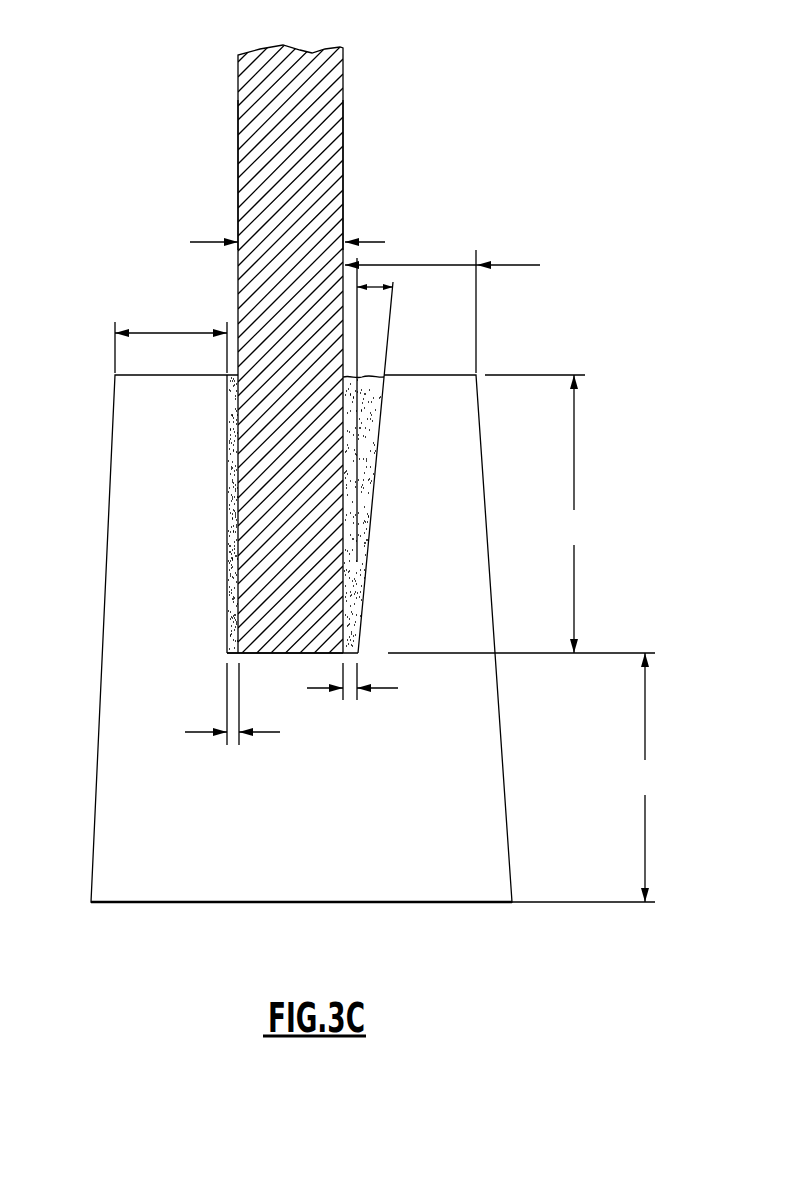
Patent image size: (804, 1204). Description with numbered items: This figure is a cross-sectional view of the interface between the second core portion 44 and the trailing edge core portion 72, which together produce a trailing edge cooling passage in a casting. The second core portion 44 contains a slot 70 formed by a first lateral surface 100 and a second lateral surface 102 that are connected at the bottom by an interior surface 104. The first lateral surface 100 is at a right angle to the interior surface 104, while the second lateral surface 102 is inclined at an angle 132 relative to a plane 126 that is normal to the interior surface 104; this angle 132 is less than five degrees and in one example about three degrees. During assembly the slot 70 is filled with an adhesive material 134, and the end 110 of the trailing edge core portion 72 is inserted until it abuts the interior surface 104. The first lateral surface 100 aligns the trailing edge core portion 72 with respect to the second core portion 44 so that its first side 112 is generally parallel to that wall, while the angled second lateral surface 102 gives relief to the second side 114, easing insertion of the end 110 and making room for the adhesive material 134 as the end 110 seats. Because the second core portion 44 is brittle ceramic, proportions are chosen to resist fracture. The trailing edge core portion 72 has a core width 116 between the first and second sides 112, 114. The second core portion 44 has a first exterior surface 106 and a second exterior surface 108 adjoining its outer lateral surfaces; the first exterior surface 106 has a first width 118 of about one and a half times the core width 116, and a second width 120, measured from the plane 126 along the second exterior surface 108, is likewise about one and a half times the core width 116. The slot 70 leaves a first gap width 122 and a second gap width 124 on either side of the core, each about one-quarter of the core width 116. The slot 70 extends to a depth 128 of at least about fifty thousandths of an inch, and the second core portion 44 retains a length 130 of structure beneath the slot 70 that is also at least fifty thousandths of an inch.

The second core portion 44 is at (122, 712).
The slot 70 is at (224, 495).
The trailing edge core portion 72 is at (317, 97).
The first lateral surface 100 is at (230, 424).
The second lateral surface 102 is at (379, 436).
The interior surface 104 is at (297, 640).
The first exterior surface 106 is at (162, 376).
The second exterior surface 108 is at (449, 338).
The end 110 is at (325, 608).
The first side 112 is at (238, 168).
The second side 114 is at (345, 153).
The core width 116 is at (280, 240).
The first width 118 is at (162, 332).
The second width 120 is at (430, 265).
The first gap width 122 is at (232, 740).
The second gap width 124 is at (350, 700).
The plane 126 is at (347, 388).
The depth 128 is at (521, 514).
The length 130 is at (588, 777).
The angle 132 is at (373, 293).
The adhesive material 134 is at (357, 495).